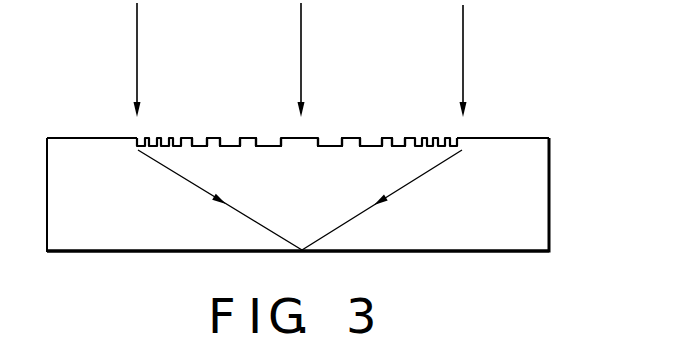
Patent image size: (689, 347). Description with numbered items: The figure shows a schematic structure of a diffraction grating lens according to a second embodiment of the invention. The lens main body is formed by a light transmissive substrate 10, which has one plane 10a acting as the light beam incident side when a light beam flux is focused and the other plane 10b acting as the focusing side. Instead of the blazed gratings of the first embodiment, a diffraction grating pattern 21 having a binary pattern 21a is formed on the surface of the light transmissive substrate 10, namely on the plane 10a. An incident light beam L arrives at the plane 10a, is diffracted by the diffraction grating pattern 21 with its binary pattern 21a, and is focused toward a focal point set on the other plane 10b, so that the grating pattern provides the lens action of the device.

The light transmissive substrate 10 is at (542, 209).
The plane 10a is at (522, 137).
The other plane 10b is at (503, 252).
The diffraction grating pattern 21 is at (342, 112).
The binary pattern 21a is at (250, 138).
The incident light beam L is at (463, 30).